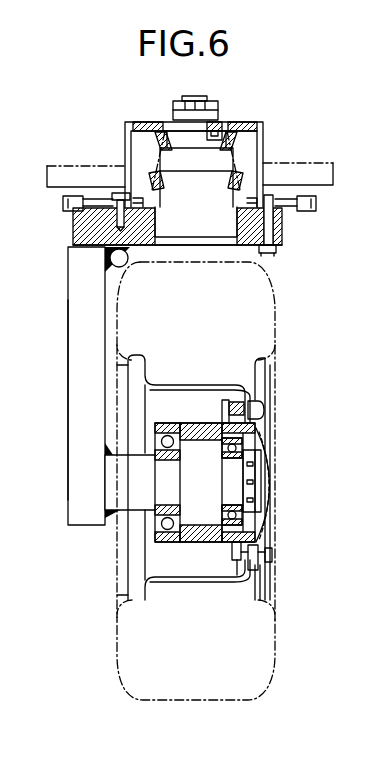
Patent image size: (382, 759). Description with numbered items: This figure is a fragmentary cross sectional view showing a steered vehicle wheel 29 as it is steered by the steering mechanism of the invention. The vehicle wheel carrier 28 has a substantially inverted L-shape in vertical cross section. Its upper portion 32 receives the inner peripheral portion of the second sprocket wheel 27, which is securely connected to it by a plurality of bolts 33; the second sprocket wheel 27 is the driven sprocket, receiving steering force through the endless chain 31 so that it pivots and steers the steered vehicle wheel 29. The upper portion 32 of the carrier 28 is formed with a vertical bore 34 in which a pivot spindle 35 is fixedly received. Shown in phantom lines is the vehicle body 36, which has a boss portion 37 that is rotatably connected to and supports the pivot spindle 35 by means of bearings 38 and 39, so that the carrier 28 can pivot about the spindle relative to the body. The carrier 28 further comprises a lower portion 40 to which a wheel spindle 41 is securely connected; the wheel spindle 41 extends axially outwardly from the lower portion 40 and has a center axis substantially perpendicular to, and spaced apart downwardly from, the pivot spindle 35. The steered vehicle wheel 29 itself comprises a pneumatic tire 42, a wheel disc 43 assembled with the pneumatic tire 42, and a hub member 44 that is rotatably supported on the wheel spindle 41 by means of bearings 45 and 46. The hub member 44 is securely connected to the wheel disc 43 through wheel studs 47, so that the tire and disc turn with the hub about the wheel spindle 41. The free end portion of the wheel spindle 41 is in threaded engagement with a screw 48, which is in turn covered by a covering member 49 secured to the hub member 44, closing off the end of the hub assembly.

The second sprocket wheel 27 is at (310, 195).
The vehicle wheel carrier 28 is at (64, 319).
The steered vehicle wheel 29 is at (282, 427).
The endless chain 31 is at (63, 203).
The upper portion 32 is at (75, 227).
The bolts 33 is at (121, 193).
The vertical bore 34 is at (238, 216).
The pivot spindle 35 is at (180, 232).
The vehicle body 36 is at (318, 165).
The boss portion 37 is at (263, 124).
The bearing 38 is at (245, 131).
The bearing 39 is at (165, 168).
The lower portion 40 is at (68, 388).
The wheel spindle 41 is at (110, 478).
The pneumatic tire 42 is at (141, 690).
The wheel disc 43 is at (270, 594).
The hub member 44 is at (262, 551).
The bearing 45 is at (158, 530).
The bearing 46 is at (216, 540).
The wheel studs 47 is at (264, 409).
The screw 48 is at (260, 480).
The covering member 49 is at (277, 521).